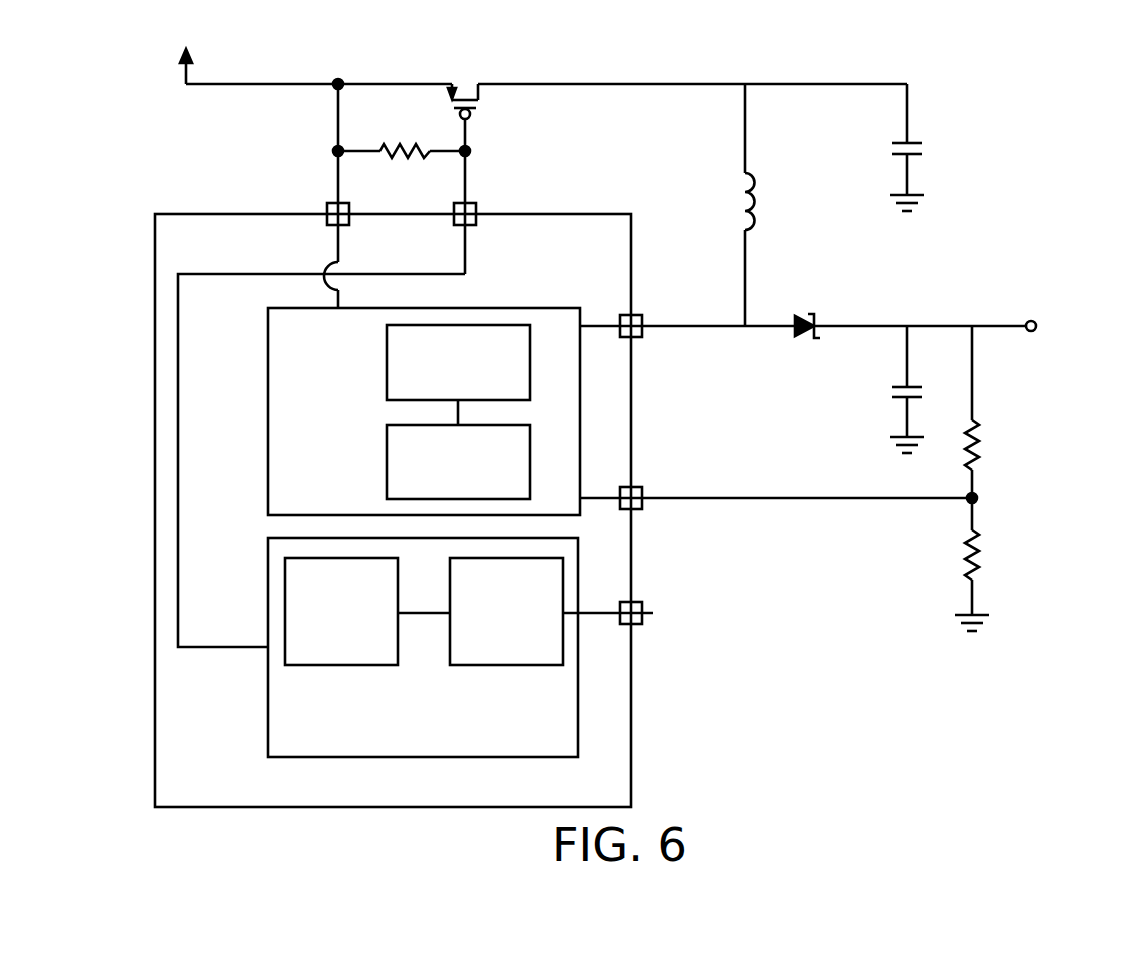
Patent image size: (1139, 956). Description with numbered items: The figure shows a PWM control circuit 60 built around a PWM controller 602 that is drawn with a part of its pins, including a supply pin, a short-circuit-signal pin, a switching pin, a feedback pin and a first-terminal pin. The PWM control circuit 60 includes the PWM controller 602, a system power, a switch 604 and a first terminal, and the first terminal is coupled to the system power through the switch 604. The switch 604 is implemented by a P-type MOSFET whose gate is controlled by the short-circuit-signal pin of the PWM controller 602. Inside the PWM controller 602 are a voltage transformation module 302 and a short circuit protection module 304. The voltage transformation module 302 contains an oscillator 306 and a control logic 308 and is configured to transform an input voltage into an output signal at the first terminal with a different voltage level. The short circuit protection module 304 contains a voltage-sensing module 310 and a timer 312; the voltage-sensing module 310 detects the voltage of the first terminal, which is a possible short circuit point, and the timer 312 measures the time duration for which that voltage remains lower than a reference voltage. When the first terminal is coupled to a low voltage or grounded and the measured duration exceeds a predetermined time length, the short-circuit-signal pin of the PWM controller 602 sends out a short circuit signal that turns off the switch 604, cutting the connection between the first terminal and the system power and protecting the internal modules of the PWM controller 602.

The PWM control circuit 60 is at (1069, 61).
The switch 604 is at (488, 84).
The PWM controller 602 is at (615, 800).
The voltage transformation module 302 is at (268, 410).
The oscillator 306 is at (387, 362).
The control logic 308 is at (387, 462).
The short circuit protection module 304 is at (268, 692).
The timer 312 is at (341, 667).
The voltage-sensing module 310 is at (507, 667).